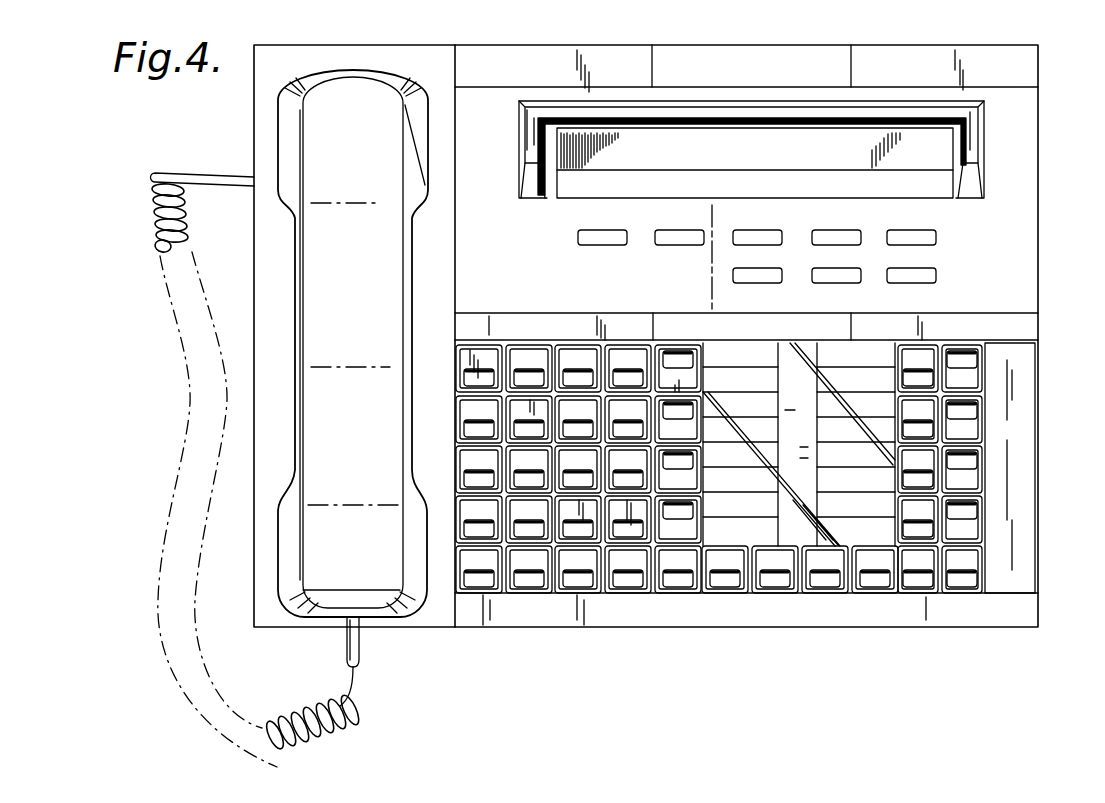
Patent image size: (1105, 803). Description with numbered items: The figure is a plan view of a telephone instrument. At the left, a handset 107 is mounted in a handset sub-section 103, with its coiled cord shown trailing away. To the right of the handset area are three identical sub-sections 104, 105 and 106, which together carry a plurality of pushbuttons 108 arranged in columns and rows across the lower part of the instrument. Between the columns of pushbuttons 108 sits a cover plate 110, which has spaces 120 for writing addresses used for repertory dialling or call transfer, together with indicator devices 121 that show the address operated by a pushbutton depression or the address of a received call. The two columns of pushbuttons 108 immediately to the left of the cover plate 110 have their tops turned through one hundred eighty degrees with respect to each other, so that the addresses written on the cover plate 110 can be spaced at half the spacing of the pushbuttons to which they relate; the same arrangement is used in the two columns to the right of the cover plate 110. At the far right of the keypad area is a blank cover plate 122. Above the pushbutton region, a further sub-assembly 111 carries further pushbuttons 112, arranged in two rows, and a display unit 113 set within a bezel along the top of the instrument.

The handset sub-section 103 is at (280, 620).
The sub-section 104 is at (532, 627).
The sub-section 105 is at (752, 627).
The sub-section 106 is at (933, 600).
The handset 107 is at (430, 603).
The pushbuttons 108 is at (677, 580).
The cover plate 110 is at (766, 523).
The further sub-assembly 111 is at (1025, 191).
The further pushbuttons 112 is at (922, 278).
The display unit 113 is at (928, 158).
The spaces 120 is at (790, 525).
The indicator devices 121 is at (827, 567).
The blank cover plate 122 is at (1017, 577).